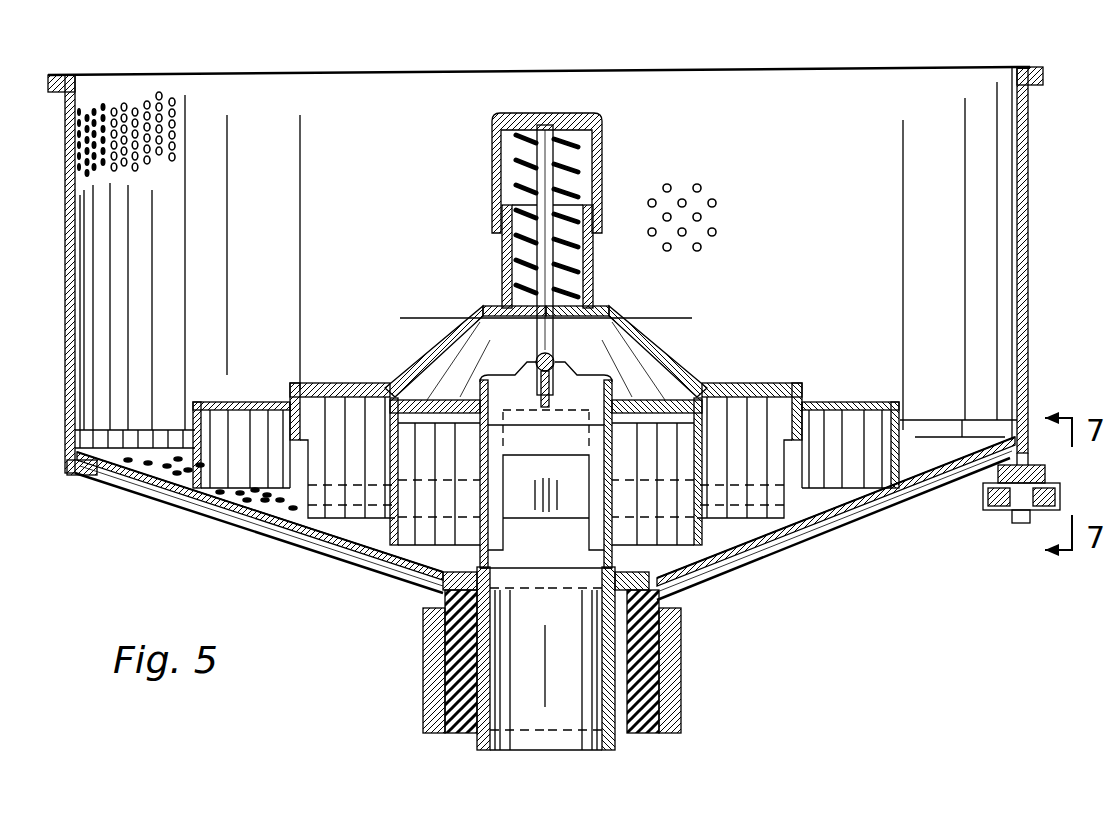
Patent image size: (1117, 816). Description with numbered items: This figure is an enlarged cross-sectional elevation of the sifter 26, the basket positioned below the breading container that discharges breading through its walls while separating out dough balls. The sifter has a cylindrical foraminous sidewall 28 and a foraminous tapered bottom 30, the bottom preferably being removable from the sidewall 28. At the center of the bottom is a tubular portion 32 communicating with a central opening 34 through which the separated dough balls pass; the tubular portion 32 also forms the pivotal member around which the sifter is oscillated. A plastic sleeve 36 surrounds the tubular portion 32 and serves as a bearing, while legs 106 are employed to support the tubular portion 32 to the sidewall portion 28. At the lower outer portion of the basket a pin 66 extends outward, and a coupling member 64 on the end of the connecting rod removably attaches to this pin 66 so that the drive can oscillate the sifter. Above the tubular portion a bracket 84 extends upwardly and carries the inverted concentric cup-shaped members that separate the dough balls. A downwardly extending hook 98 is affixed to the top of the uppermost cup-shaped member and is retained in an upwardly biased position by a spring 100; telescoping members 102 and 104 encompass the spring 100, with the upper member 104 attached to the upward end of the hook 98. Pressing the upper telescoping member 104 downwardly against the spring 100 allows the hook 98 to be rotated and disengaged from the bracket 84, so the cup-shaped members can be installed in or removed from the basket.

The sifter 26 is at (1033, 67).
The cylindrical foraminous sidewall 28 is at (1030, 213).
The foraminous tapered bottom 30 is at (790, 533).
The tubular portion 32 is at (681, 640).
The central opening 34 is at (706, 566).
The plastic sleeve 36 is at (640, 675).
The coupling member 64 is at (1058, 498).
The pin 66 is at (1020, 523).
The bracket 84 is at (668, 382).
The hook 98 is at (502, 314).
The spring 100 is at (579, 173).
The telescoping member 102 is at (597, 268).
The telescoping member 104 is at (497, 146).
The legs 106 is at (284, 531).